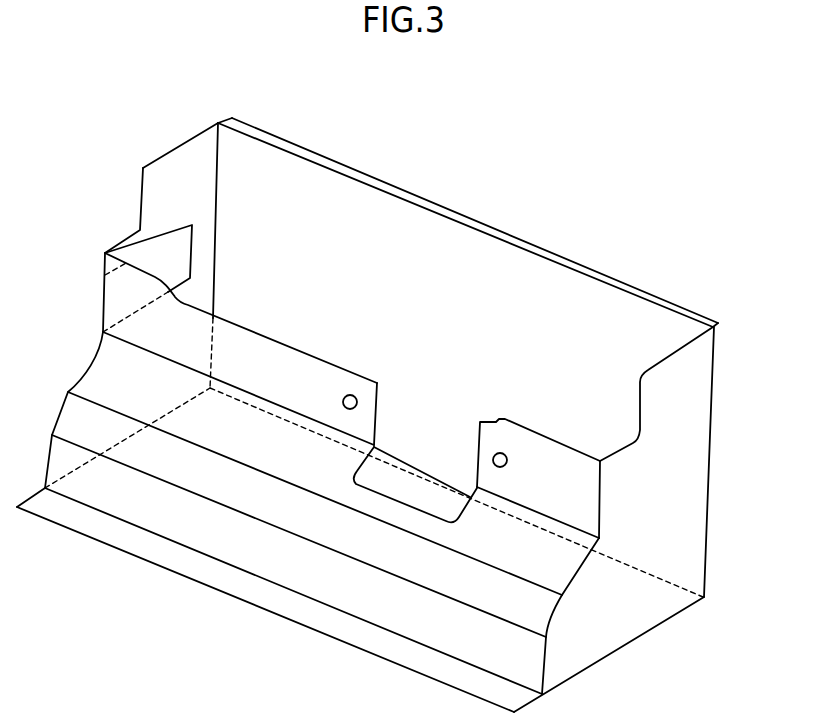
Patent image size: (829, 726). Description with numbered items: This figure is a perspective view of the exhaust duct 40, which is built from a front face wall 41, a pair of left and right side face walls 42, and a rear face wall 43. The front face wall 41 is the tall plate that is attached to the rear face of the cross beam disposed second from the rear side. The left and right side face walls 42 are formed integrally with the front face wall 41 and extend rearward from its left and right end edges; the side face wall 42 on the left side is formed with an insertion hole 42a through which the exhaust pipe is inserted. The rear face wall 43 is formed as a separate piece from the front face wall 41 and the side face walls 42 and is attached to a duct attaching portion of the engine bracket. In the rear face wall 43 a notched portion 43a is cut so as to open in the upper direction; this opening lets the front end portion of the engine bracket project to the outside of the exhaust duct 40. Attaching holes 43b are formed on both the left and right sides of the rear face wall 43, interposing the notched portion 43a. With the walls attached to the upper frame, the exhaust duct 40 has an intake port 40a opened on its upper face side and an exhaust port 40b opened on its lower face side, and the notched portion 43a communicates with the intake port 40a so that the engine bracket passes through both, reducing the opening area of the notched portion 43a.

The exhaust duct 40 is at (603, 243).
The intake port 40a is at (276, 311).
The exhaust port 40b is at (648, 580).
The front face wall 41 is at (428, 248).
The side face walls 42 is at (165, 155).
The insertion hole 42a is at (172, 251).
The rear face wall 43 is at (255, 558).
The notched portion 43a is at (428, 496).
The attaching holes 43b is at (358, 414).